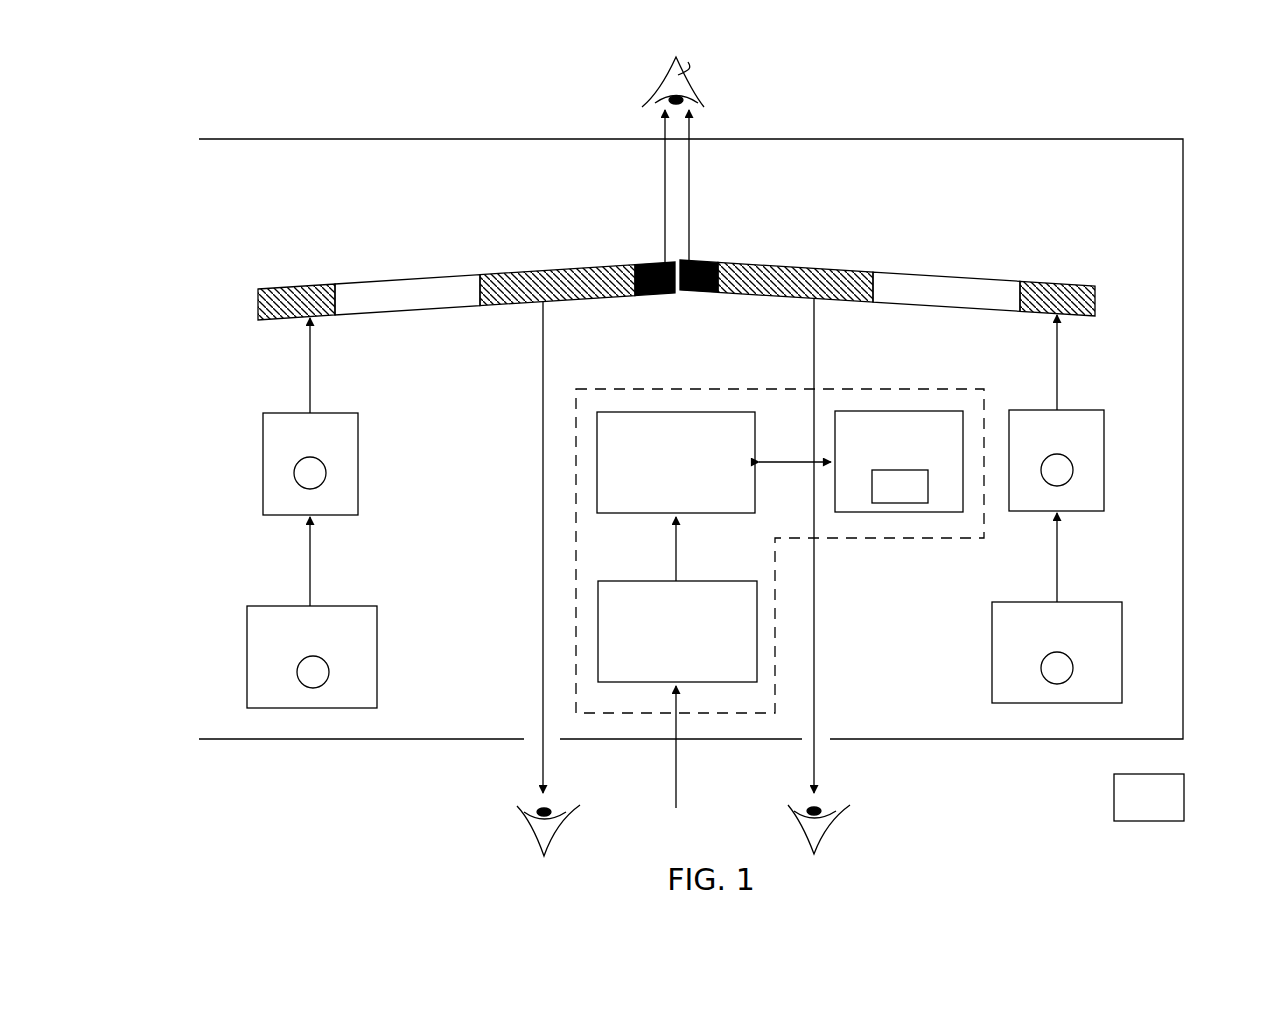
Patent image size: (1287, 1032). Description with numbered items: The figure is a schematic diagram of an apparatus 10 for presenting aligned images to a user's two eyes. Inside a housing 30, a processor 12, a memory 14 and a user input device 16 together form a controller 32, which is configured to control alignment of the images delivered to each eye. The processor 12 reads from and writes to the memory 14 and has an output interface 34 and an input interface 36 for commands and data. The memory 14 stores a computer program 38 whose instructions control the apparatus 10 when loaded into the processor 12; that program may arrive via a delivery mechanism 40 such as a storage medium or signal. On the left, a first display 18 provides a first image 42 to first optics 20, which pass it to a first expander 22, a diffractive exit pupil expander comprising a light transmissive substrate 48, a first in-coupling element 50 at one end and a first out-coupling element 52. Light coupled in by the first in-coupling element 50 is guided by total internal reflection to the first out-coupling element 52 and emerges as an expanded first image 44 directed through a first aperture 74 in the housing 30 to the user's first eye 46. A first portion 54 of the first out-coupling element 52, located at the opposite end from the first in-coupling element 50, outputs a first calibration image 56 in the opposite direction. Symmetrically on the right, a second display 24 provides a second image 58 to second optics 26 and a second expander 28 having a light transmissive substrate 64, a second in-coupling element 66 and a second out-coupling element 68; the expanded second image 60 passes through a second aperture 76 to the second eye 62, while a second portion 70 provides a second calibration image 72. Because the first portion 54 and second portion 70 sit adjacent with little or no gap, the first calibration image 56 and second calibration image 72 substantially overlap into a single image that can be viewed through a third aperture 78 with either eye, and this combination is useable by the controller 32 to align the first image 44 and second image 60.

The apparatus 10 is at (1082, 101).
The processor 12 is at (712, 411).
The memory 14 is at (934, 410).
The user input device 16 is at (757, 655).
The first display 18 is at (379, 653).
The first optics 20 is at (359, 462).
The first expander 22 is at (460, 268).
The second display 24 is at (991, 654).
The second optics 26 is at (1105, 460).
The second expander 28 is at (887, 266).
The housing 30 is at (1184, 357).
The controller 32 is at (830, 540).
The output interface 34 is at (718, 514).
The input interface 36 is at (655, 411).
The computer program 38 is at (904, 504).
The delivery mechanism 40 is at (1185, 800).
The first image 42 is at (312, 376).
The first image 44 is at (542, 372).
The first eye 46 is at (560, 822).
The light transmissive substrate 48 is at (395, 298).
The first in-coupling element 50 is at (272, 288).
The first out-coupling element 52 is at (570, 266).
The first portion 54 is at (652, 264).
The first calibration image 56 is at (664, 157).
The second image 58 is at (1059, 373).
The second image 60 is at (816, 360).
The second eye 62 is at (830, 822).
The light transmissive substrate 64 is at (985, 292).
The second in-coupling element 66 is at (1059, 284).
The second out-coupling element 68 is at (794, 270).
The second portion 70 is at (702, 263).
The second calibration image 72 is at (691, 188).
The first aperture 74 is at (516, 759).
The second aperture 76 is at (830, 749).
The third aperture 78 is at (724, 118).